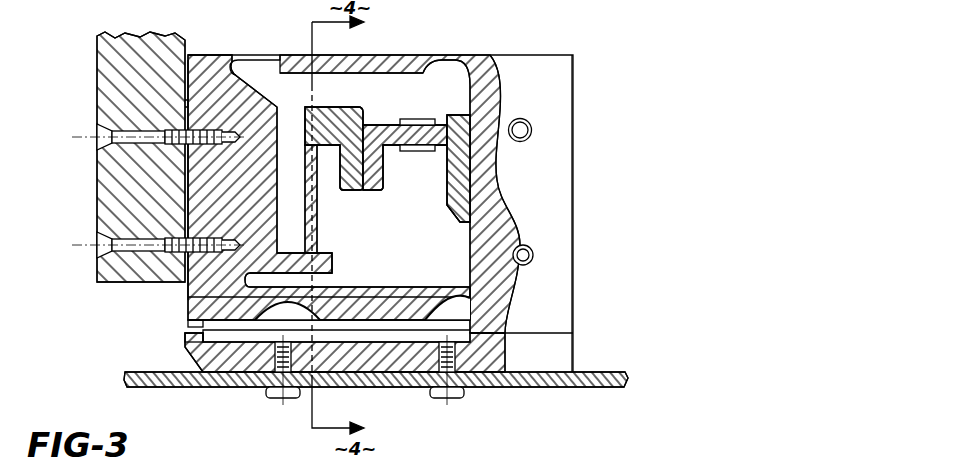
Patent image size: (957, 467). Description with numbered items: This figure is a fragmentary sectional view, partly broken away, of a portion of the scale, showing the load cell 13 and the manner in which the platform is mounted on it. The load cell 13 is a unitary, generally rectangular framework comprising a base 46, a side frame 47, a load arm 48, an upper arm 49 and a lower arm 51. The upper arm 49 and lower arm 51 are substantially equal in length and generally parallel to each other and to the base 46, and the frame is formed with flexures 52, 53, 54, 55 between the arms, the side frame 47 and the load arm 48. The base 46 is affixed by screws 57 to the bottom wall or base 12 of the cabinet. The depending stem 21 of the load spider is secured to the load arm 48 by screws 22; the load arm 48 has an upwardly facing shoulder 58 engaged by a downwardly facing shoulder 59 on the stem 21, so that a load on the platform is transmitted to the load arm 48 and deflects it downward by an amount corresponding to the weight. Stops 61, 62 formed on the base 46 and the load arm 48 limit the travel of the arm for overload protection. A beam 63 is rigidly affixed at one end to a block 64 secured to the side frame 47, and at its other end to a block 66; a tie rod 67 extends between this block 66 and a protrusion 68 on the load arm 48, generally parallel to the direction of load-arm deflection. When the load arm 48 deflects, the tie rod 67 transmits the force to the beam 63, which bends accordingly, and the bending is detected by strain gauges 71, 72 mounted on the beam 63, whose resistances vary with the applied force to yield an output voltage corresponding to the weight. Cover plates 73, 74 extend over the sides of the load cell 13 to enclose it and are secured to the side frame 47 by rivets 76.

The base 12 is at (598, 390).
The load cell 13 is at (490, 59).
The depending stem 21 is at (97, 57).
The screws 22 is at (148, 191).
The base 46 is at (228, 381).
The side frame 47 is at (498, 195).
The load arm 48 is at (228, 57).
The upper arm 49 is at (380, 65).
The lower arm 51 is at (378, 298).
The flexure 52 is at (262, 59).
The flexure 53 is at (450, 58).
The flexure 54 is at (288, 300).
The flexure 55 is at (460, 300).
The screws 57 is at (444, 398).
The upwardly facing shoulder 58 is at (216, 82).
The downwardly facing shoulder 59 is at (185, 108).
The stop 61 is at (187, 339).
The stop 62 is at (196, 321).
The beam 63 is at (392, 125).
The block 64 is at (447, 195).
The block 66 is at (360, 108).
The tie rod 67 is at (316, 208).
The protrusion 68 is at (328, 258).
The strain gauge 71 is at (430, 119).
The strain gauge 72 is at (428, 152).
The cover plate 73 is at (364, 330).
The cover plate 74 is at (565, 262).
The rivets 76 is at (526, 119).